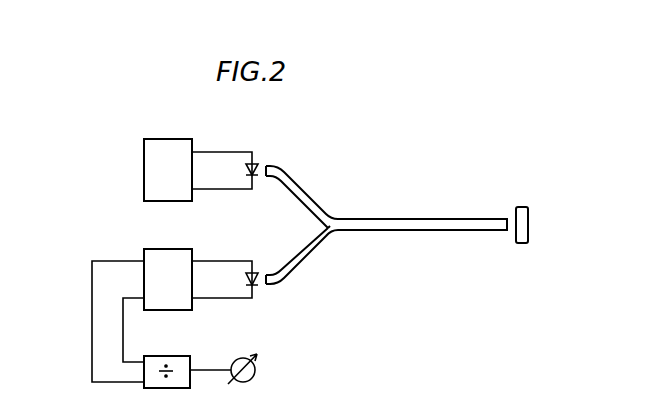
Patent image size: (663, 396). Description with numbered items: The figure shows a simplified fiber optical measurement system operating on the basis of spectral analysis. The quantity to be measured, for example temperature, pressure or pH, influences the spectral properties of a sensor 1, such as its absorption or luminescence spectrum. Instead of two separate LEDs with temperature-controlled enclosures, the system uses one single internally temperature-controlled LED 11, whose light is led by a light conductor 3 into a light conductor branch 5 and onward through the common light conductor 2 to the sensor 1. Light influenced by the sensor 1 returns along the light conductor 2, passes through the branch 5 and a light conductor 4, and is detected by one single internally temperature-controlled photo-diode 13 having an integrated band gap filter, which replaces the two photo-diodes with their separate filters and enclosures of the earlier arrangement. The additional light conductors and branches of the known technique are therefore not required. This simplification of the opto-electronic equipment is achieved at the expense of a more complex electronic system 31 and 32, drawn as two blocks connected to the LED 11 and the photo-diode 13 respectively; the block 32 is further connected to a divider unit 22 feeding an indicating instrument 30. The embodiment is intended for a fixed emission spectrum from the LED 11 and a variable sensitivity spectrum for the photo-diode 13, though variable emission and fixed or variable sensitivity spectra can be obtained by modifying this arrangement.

The sensor 1 is at (523, 207).
The light conductor 2 is at (408, 220).
The light conductor 3 is at (308, 193).
The light conductor 4 is at (305, 263).
The light conductor branch 5 is at (338, 218).
The LED 11 is at (255, 161).
The photo-diode 13 is at (255, 270).
The divider 22 is at (173, 356).
The indicating instrument 30 is at (238, 358).
The electronic system 31 is at (172, 139).
The electronic system 32 is at (172, 249).